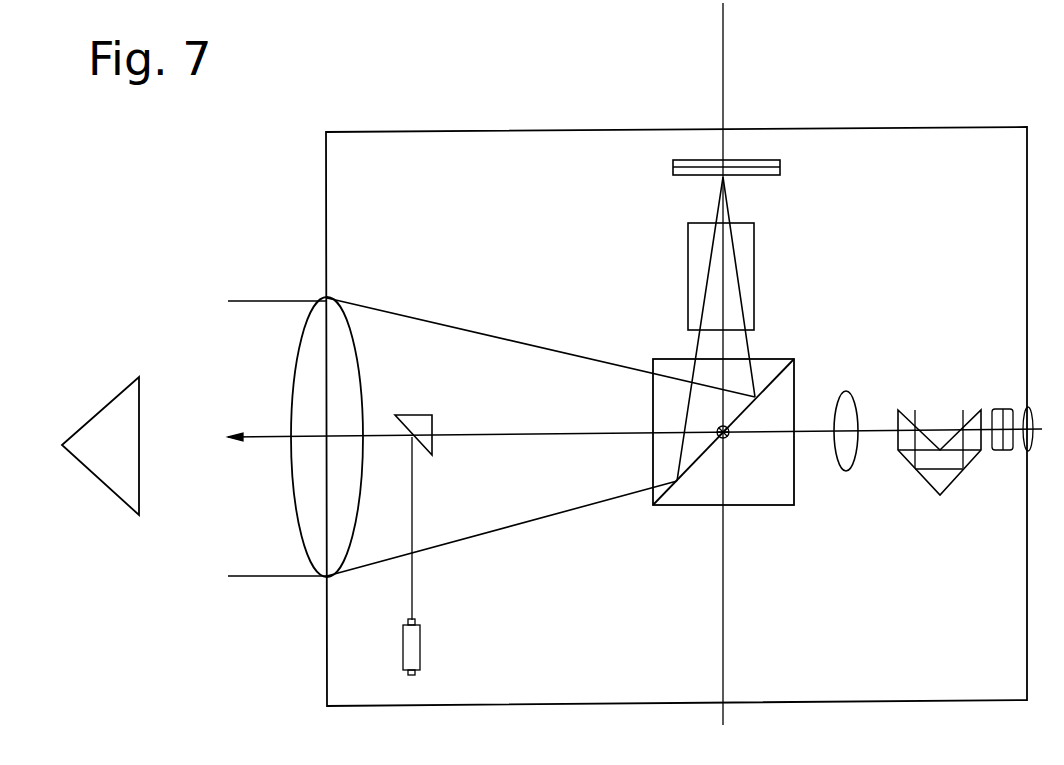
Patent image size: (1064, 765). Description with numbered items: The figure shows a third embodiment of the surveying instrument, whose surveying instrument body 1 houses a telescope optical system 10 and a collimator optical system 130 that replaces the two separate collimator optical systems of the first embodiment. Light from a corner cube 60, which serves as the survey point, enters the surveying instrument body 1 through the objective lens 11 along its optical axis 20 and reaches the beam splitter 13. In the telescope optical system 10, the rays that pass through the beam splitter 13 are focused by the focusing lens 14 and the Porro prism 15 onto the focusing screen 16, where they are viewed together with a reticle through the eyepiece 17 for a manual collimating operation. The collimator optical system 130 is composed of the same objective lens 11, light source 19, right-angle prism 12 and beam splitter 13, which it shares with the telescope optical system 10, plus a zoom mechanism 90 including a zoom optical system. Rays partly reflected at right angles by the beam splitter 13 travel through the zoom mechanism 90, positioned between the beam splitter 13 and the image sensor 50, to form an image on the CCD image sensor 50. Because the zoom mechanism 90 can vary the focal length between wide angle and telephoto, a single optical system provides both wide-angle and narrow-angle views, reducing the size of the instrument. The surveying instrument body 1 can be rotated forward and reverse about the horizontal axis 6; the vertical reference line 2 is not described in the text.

The surveying instrument body 1 is at (785, 699).
The vertical optical axis 2 is at (723, 103).
The horizontal axis 6 is at (722, 440).
The telescope optical system 10 is at (1016, 672).
The objective lens 11 is at (307, 547).
The right-angle prism 12 is at (428, 458).
The beam splitter 13 is at (794, 493).
The focusing lens 14 is at (848, 471).
The Porro prism 15 is at (932, 480).
The focusing screen 16 is at (998, 452).
The eyepiece 17 is at (1022, 452).
The light source 19 is at (416, 623).
The optical axis 20 is at (518, 437).
The image sensor 50 is at (780, 168).
The corner cube 60 is at (139, 500).
The zoom mechanism 90 is at (754, 298).
The collimator optical system 130 is at (815, 417).